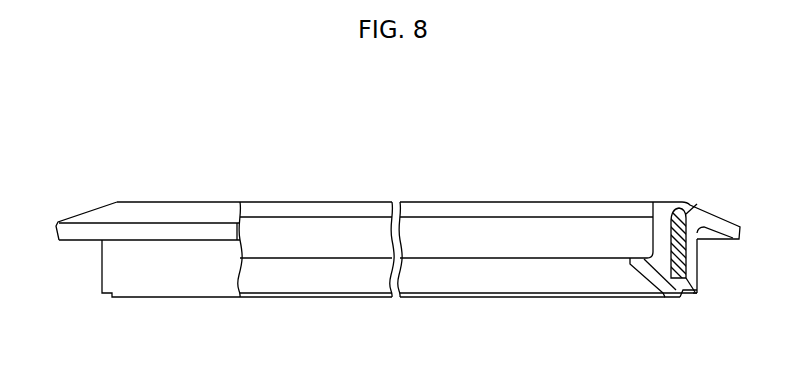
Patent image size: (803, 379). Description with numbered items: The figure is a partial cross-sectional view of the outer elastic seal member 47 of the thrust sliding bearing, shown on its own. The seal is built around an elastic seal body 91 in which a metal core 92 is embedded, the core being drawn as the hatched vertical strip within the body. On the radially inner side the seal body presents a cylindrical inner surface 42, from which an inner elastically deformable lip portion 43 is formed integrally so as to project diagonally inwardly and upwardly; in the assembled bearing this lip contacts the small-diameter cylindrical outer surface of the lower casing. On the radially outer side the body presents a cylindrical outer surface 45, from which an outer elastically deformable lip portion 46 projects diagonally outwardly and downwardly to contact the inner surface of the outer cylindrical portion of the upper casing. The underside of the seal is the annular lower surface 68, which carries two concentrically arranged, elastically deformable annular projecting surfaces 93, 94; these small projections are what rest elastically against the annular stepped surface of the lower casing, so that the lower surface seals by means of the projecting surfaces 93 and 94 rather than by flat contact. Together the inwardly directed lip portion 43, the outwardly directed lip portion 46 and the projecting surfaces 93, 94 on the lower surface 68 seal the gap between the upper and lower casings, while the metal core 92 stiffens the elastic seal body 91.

The outer elastic seal member 47 is at (82, 205).
The annular lower surface 68 is at (449, 297).
The cylindrical inner surface 42 is at (652, 232).
The elastic seal body 91 is at (663, 228).
The outer elastically deformable lip portion 46 is at (730, 228).
The cylindrical outer surface 45 is at (697, 263).
The inner elastically deformable lip portion 43 is at (630, 297).
The annular projecting surface 93 is at (662, 295).
The annular projecting surface 94 is at (683, 297).
The metal core 92 is at (697, 292).